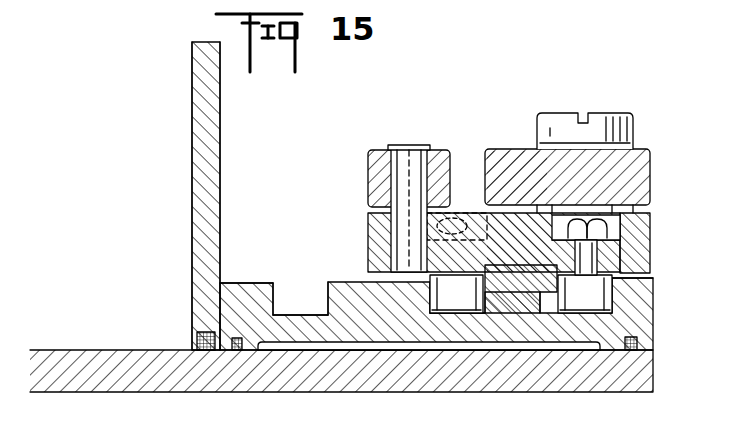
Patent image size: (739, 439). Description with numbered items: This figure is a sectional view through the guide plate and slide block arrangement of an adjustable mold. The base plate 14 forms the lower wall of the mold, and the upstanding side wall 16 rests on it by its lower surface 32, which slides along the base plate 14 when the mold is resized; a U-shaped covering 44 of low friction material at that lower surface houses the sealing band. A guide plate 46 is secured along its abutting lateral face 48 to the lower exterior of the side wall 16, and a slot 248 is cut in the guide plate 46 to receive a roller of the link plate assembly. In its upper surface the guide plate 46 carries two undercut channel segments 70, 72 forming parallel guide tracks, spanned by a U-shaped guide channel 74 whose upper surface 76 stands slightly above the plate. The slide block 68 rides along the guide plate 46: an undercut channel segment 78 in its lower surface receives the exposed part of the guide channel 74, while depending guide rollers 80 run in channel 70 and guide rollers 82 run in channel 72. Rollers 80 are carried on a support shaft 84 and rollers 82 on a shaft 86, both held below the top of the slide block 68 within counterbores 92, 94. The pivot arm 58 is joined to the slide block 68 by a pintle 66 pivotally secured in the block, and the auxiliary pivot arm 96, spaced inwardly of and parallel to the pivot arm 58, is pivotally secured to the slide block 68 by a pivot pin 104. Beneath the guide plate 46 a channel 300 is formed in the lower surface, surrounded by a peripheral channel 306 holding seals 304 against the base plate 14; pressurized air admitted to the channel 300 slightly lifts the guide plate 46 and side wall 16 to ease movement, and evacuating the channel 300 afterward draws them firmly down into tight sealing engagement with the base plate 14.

The base plate 14 is at (72, 372).
The side wall 16 is at (207, 97).
The lower surface 32 is at (196, 350).
The U-shaped covering 44 is at (194, 341).
The guide plate 46 is at (370, 331).
The lateral face 48 is at (223, 298).
The slot 248 is at (275, 297).
The pivot arm 58 is at (509, 155).
The pintle 66 is at (595, 124).
The slide block 68 is at (367, 238).
The undercut channel segment 70 is at (441, 318).
The undercut channel segment 72 is at (632, 332).
The U-shaped guide channel 74 is at (526, 296).
The upper surface 76 is at (497, 261).
The undercut channel segment 78 is at (564, 254).
The guide rollers 80 is at (440, 294).
The guide rollers 82 is at (600, 293).
The support shaft 84 is at (468, 213).
The shaft 86 is at (593, 258).
The counterbore 92 is at (517, 177).
The counterbore 94 is at (606, 215).
The auxiliary pivot arm 96 is at (368, 171).
The pivot pin 104 is at (403, 156).
The channel 300 is at (440, 349).
The seals 304 is at (238, 349).
The peripheral channel 306 is at (236, 338).